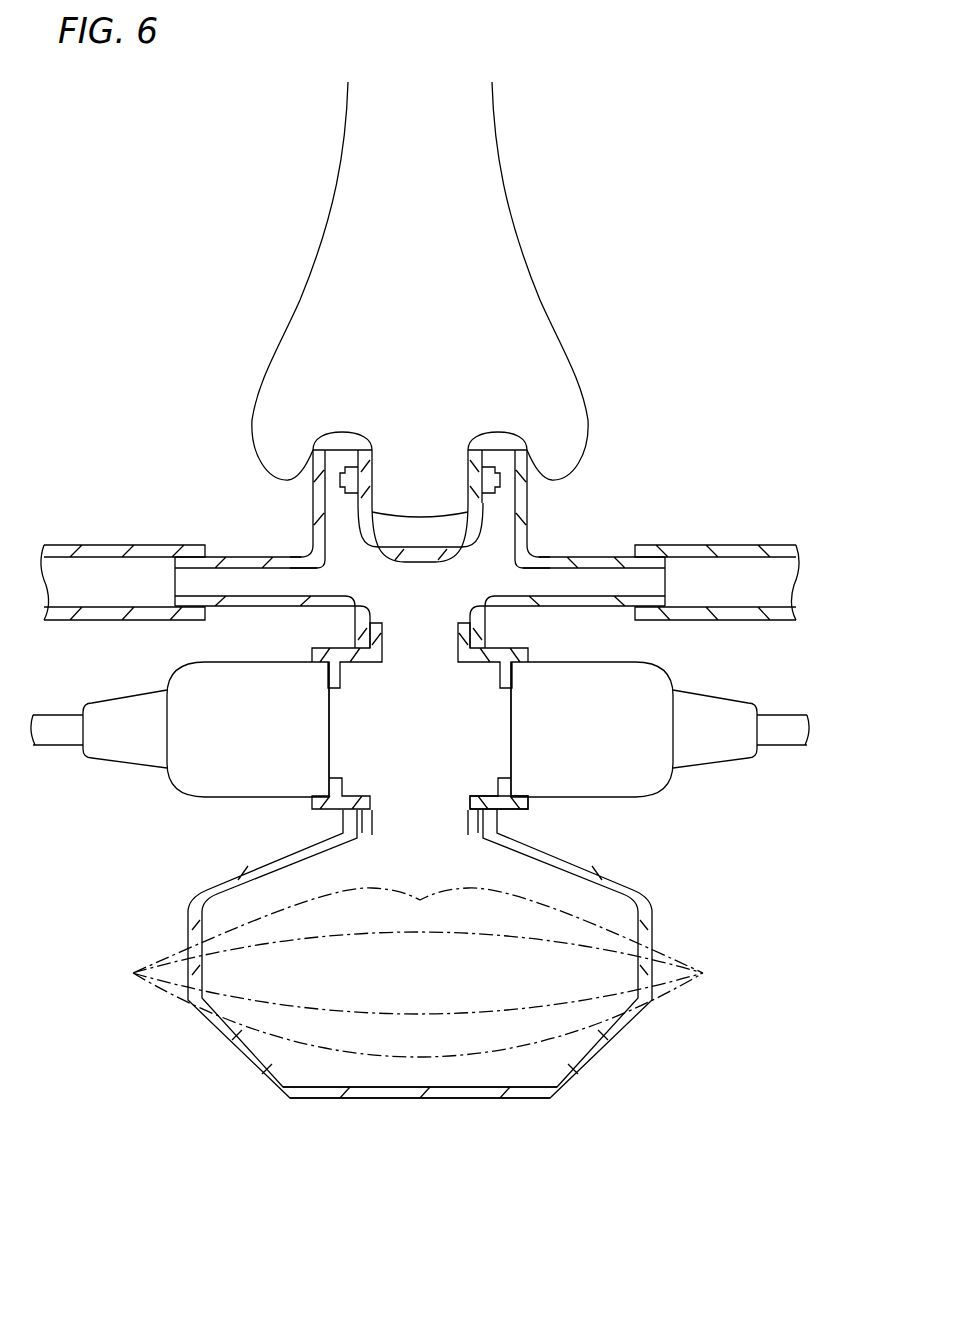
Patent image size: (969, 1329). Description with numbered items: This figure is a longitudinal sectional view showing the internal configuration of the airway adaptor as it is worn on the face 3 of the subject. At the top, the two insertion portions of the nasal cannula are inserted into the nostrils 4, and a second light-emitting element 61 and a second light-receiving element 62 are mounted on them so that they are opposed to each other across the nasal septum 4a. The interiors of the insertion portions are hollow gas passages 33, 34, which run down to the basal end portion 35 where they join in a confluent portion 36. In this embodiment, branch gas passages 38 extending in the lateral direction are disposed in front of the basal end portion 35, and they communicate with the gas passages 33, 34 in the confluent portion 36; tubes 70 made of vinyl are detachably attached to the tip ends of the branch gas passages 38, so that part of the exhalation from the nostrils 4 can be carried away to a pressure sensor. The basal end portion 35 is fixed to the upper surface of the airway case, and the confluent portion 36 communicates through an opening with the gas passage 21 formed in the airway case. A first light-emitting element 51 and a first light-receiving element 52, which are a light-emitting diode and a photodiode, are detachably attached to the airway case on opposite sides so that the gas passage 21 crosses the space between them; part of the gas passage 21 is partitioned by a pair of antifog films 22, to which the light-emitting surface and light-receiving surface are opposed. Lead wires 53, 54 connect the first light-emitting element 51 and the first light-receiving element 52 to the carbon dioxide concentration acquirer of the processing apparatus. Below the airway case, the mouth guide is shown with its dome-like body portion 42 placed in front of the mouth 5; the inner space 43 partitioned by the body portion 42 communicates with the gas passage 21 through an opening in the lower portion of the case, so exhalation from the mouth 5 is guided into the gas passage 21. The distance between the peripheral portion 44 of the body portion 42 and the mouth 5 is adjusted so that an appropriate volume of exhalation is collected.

The face 3 is at (116, 304).
The nostrils 4 is at (330, 442).
The nasal septum 4a is at (427, 493).
The mouth 5 is at (668, 955).
The gas passage 21 is at (485, 767).
The antifog films 22 is at (332, 707).
The gas passage 33 is at (500, 525).
The gas passage 34 is at (335, 523).
The basal end portion 35 is at (352, 618).
The confluent portion 36 is at (413, 607).
The branch gas passages 38 is at (233, 577).
The body portion 42 is at (605, 900).
The inner space 43 is at (412, 836).
The peripheral portion 44 is at (620, 1035).
The first light-emitting element 51 is at (648, 688).
The first light-receiving element 52 is at (190, 688).
The lead wire 53 is at (782, 733).
The lead wire 54 is at (57, 732).
The second light-emitting element 61 is at (500, 480).
The second light-receiving element 62 is at (340, 482).
The tubes 70 is at (88, 543).